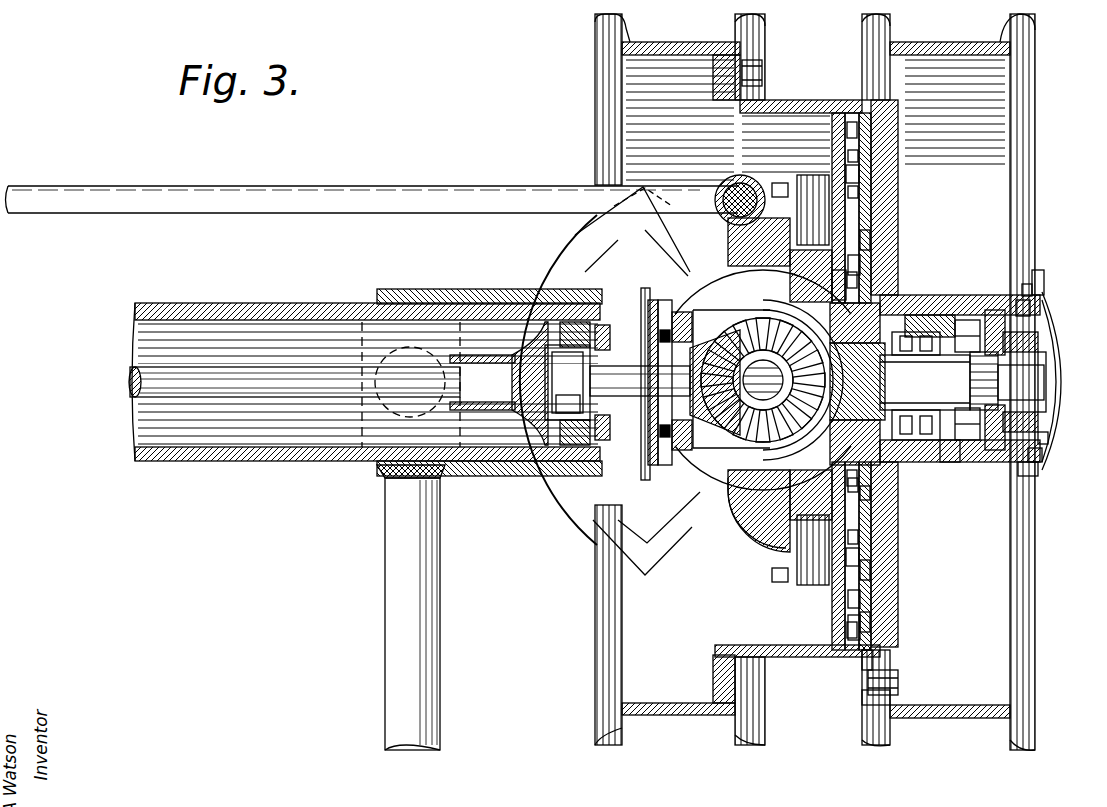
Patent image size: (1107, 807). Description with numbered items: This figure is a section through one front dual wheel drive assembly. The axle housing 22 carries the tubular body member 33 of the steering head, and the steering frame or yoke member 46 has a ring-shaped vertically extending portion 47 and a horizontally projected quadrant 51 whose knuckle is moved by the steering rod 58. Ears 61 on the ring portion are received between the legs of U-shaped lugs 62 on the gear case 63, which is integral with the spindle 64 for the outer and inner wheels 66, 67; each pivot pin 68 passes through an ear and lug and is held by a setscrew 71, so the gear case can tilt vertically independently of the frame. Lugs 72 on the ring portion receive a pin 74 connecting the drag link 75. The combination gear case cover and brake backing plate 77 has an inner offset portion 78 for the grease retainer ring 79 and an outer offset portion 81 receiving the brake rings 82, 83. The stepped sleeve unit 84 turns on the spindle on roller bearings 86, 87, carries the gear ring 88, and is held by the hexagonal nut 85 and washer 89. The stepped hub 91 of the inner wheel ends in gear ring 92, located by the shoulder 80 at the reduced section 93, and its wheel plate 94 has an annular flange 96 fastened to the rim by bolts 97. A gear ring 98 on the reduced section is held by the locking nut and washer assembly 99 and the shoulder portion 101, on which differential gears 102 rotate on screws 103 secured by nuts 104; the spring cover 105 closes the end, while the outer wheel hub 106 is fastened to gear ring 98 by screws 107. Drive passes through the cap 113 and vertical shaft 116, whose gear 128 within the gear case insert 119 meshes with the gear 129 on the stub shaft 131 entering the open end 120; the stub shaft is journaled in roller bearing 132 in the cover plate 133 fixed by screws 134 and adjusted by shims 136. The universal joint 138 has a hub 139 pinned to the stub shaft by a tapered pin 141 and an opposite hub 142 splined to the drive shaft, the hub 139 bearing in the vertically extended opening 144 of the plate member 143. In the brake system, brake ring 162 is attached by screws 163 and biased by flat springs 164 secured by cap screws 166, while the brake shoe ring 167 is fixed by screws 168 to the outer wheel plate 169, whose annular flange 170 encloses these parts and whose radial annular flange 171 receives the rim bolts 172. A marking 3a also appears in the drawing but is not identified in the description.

The axle housing 22 is at (255, 303).
The tubular body member 33 is at (485, 289).
The housing section 3a is at (545, 482).
The steering frame 46 is at (730, 552).
The vertically extending portion 47 is at (735, 525).
The quadrant 51 is at (588, 512).
The steering rod 58 is at (442, 620).
The ear 61 is at (862, 182).
The U-shaped lug 62 is at (862, 166).
The gear case 63 is at (752, 440).
The spindle 64 is at (925, 382).
The outer wheel 66 is at (948, 45).
The inner wheel 67 is at (674, 47).
The pivot pin 68 is at (810, 175).
The setscrew 71 is at (775, 183).
The lug 72 is at (720, 186).
The pin 74 is at (740, 193).
The drag link 75 is at (445, 186).
The combination gear case cover and brake backing plate 77 is at (898, 230).
The offset portion 78 is at (862, 272).
The grease retainer ring 79 is at (862, 295).
The shoulder 80 is at (980, 295).
The offset portion 81 is at (803, 100).
The brake ring 82 is at (838, 113).
The brake ring 83 is at (860, 113).
The sleeve unit 84 is at (938, 315).
The hexagonal nut 85 is at (1038, 352).
The roller bearing 86 is at (888, 412).
The roller bearing 87 is at (1055, 400).
The gear ring 88 is at (872, 250).
The washer 89 is at (1038, 345).
The stepped hub 91 is at (912, 462).
The gear ring 92 is at (966, 440).
The reduced section 93 is at (1040, 315).
The wheel plate 94 is at (862, 512).
The annular flange 96 is at (776, 100).
The bolts 97 is at (762, 58).
The gear ring 98 is at (1032, 290).
The locking nut and washer assembly 99 is at (1048, 438).
The circumferential shoulder portion 101 is at (1030, 307).
The differential gears 102 is at (1042, 455).
The screws 103 is at (1028, 476).
The nut 104 is at (985, 395).
The spring cover 105 is at (1046, 385).
The hub 106 is at (946, 462).
The screws 107 is at (1040, 272).
The cap 113 is at (712, 466).
The vertical shaft 116 is at (735, 418).
The gear case insert 119 is at (672, 312).
The open end 120 is at (653, 300).
The gear 128 is at (735, 316).
The gear 129 is at (722, 348).
The stub shaft 131 is at (640, 381).
The roller bearing 132 is at (612, 426).
The cover plate 133 is at (645, 472).
The screws 134 is at (612, 325).
The shims 136 is at (680, 450).
The universal joint 138 is at (572, 382).
The hub 139 is at (567, 382).
The tapered pin 141 is at (574, 400).
The hub 142 is at (522, 415).
The plate member 143 is at (643, 278).
The vertically extended opening 144 is at (572, 383).
The brake ring 162 is at (862, 562).
The screws 163 is at (872, 580).
The flat springs 164 is at (862, 545).
The cap screw 166 is at (872, 505).
The brake shoe ring 167 is at (862, 645).
The screws 168 is at (862, 600).
The wheel plate 169 is at (872, 628).
The annular flange 170 is at (866, 660).
The annular flange 171 is at (870, 692).
The bolts 172 is at (900, 682).